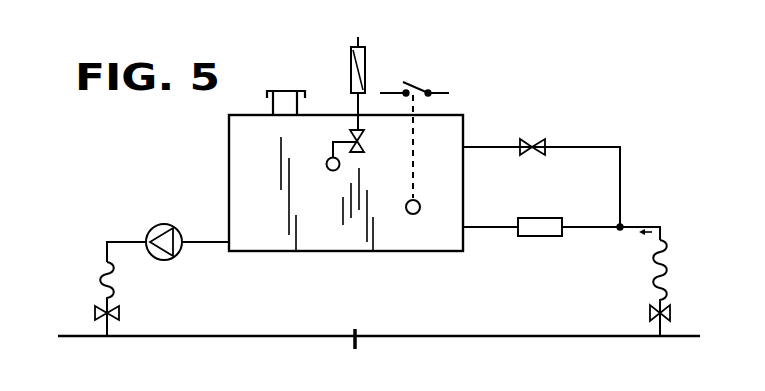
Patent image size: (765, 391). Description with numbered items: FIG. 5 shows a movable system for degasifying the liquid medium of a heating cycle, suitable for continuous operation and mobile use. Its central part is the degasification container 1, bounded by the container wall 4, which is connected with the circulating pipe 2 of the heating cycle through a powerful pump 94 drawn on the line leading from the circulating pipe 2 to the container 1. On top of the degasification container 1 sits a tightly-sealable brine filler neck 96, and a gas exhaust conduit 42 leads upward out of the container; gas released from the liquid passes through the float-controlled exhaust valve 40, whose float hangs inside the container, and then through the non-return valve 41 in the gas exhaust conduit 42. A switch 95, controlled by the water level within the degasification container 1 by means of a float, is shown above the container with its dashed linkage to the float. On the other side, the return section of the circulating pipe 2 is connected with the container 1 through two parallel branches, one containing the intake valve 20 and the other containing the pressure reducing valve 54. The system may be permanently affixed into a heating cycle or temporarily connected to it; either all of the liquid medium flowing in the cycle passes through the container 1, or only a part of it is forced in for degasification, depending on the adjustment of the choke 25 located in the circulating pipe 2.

The degasification container 1 is at (253, 152).
The circulating pipe 2 is at (148, 332).
The container wall 4 is at (464, 114).
The intake valve 20 is at (534, 139).
The choke 25 is at (367, 328).
The float-controlled exhaust valve 40 is at (366, 139).
The non-return valve 41 is at (367, 67).
The gas exhaust conduit 42 is at (366, 38).
The pressure reducing valve 54 is at (526, 216).
The pump 94 is at (160, 223).
The switch 95 is at (421, 83).
The brine filler neck 96 is at (278, 87).